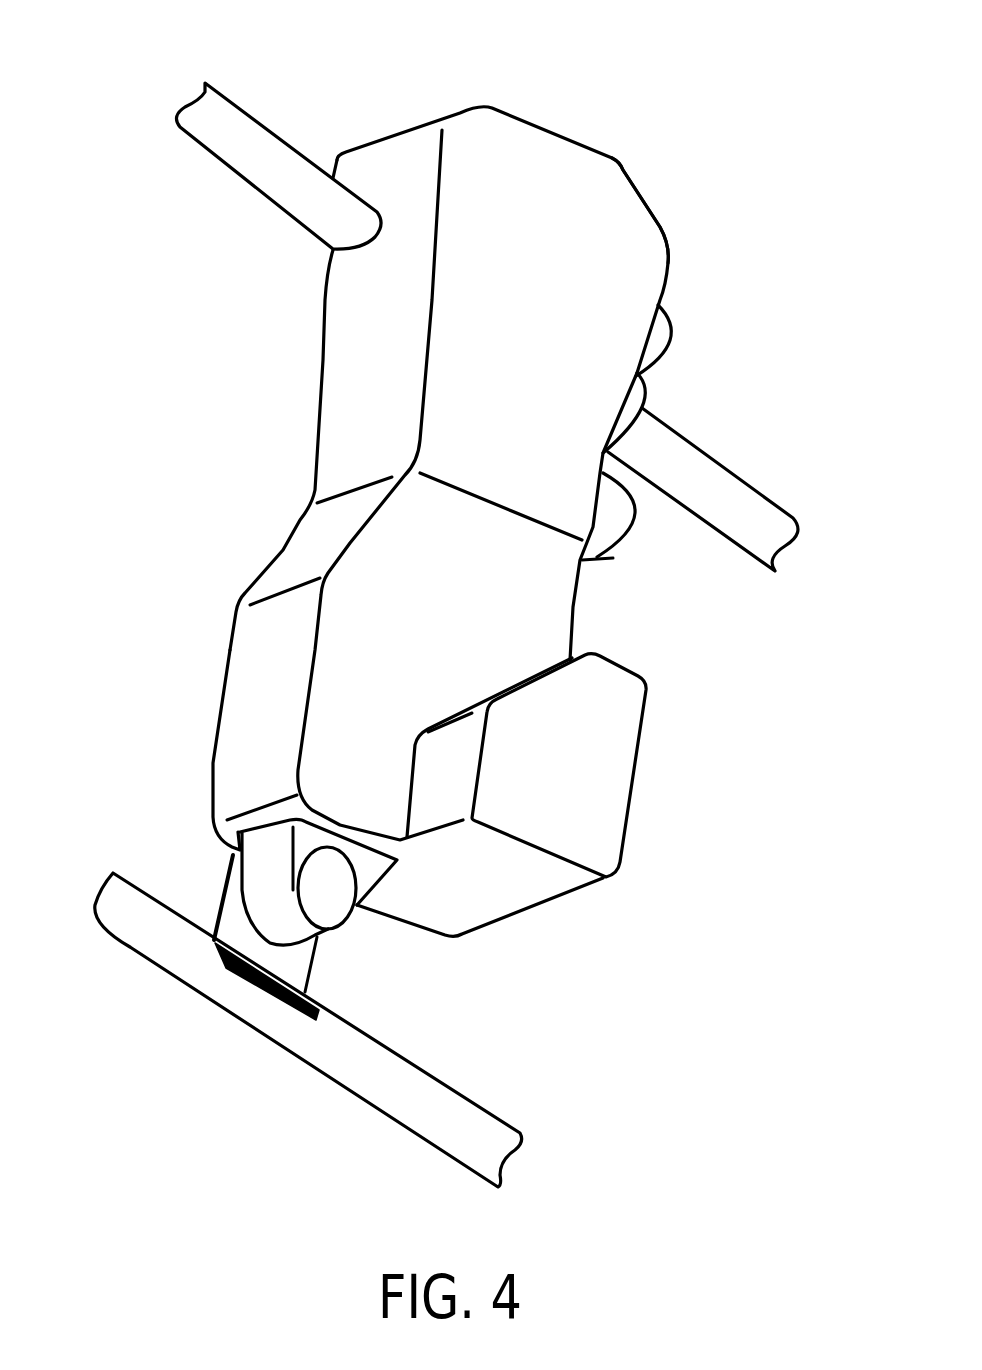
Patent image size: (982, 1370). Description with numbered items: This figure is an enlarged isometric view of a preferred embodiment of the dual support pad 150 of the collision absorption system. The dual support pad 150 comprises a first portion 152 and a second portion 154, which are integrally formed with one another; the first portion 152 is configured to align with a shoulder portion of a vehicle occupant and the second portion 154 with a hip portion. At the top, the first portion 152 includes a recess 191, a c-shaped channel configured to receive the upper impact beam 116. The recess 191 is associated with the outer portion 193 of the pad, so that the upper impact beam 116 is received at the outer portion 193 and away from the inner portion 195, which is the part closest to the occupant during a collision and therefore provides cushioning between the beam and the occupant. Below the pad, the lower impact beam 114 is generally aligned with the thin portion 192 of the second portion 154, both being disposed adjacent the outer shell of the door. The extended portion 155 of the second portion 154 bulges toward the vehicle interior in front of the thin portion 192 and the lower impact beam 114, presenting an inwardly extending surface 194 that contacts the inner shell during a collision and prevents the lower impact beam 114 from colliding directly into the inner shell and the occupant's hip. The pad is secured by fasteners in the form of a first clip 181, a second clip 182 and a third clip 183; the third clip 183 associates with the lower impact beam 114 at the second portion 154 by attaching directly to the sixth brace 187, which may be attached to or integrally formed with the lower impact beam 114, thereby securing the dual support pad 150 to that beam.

The dual support pad 150 is at (650, 115).
The first portion 152 is at (635, 235).
The inner portion 195 is at (437, 300).
The outer portion 193 is at (347, 400).
The thin portion 192 is at (250, 685).
The second portion 154 is at (370, 565).
The recess 191 is at (333, 252).
The first clip 181 is at (655, 343).
The second clip 182 is at (617, 528).
The upper impact beam 116 is at (748, 510).
The extended portion 155 is at (605, 773).
The inwardly extending surface 194 is at (568, 780).
The third clip 183 is at (332, 878).
The sixth brace 187 is at (300, 957).
The lower impact beam 114 is at (142, 913).